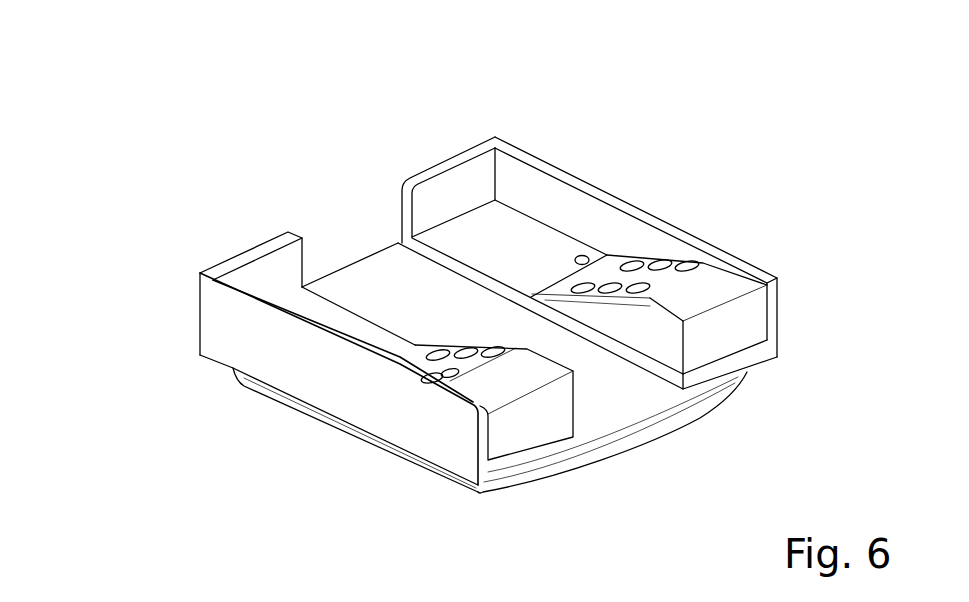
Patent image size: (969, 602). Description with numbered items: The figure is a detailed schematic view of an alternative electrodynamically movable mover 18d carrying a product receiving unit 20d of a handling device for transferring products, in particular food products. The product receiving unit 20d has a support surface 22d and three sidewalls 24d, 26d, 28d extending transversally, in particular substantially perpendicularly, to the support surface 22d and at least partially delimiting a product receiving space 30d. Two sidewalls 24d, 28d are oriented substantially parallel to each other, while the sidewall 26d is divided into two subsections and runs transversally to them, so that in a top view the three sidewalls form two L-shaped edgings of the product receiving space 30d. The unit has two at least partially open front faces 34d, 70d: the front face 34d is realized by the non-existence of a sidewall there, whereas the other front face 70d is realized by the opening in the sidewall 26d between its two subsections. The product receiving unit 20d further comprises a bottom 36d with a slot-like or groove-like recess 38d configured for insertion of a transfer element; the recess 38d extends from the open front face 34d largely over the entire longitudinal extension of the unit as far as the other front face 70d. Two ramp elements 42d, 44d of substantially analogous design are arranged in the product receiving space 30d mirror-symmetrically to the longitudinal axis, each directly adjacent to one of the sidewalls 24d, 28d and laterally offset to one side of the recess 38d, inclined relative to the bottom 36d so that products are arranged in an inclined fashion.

The mover 18d is at (337, 428).
The product receiving unit 20d is at (590, 141).
The support surface 22d is at (531, 240).
The sidewall 24d is at (603, 225).
The sidewall 26d is at (458, 205).
The sidewall 28d is at (232, 318).
The product receiving space 30d is at (300, 302).
The front face 34d is at (670, 431).
The bottom 36d is at (325, 318).
The recess 38d is at (385, 295).
The ramp element 42d is at (660, 268).
The ramp element 44d is at (467, 365).
The front face 70d is at (327, 216).